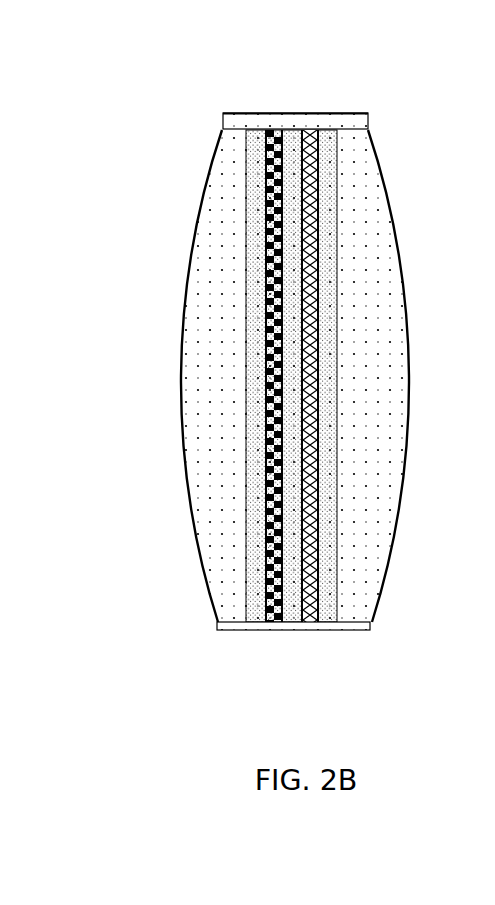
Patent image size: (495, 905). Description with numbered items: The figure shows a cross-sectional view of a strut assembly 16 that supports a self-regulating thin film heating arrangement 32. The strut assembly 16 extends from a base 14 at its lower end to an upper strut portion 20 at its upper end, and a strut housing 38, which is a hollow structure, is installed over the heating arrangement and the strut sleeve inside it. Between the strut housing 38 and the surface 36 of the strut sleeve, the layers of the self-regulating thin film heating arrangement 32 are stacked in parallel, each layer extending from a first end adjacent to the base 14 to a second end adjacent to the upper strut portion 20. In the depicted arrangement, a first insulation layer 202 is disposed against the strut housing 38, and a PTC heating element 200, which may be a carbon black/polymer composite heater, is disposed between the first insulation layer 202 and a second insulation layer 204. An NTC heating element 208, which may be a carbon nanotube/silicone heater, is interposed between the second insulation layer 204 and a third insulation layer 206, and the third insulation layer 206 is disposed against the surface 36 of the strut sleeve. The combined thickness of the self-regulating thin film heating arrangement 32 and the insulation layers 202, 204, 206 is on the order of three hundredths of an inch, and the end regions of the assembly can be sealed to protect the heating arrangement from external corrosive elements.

The strut assembly 16 is at (180, 132).
The upper strut portion 20 is at (325, 125).
The base 14 is at (220, 625).
The self-regulating thin film heating arrangement 32 is at (243, 610).
The surface of the strut sleeve 36 is at (388, 390).
The strut housing 38 is at (200, 380).
The PTC heating element 200 is at (278, 273).
The first insulation layer 202 is at (257, 228).
The second insulation layer 204 is at (287, 303).
The third insulation layer 206 is at (324, 224).
The NTC heating element 208 is at (308, 195).